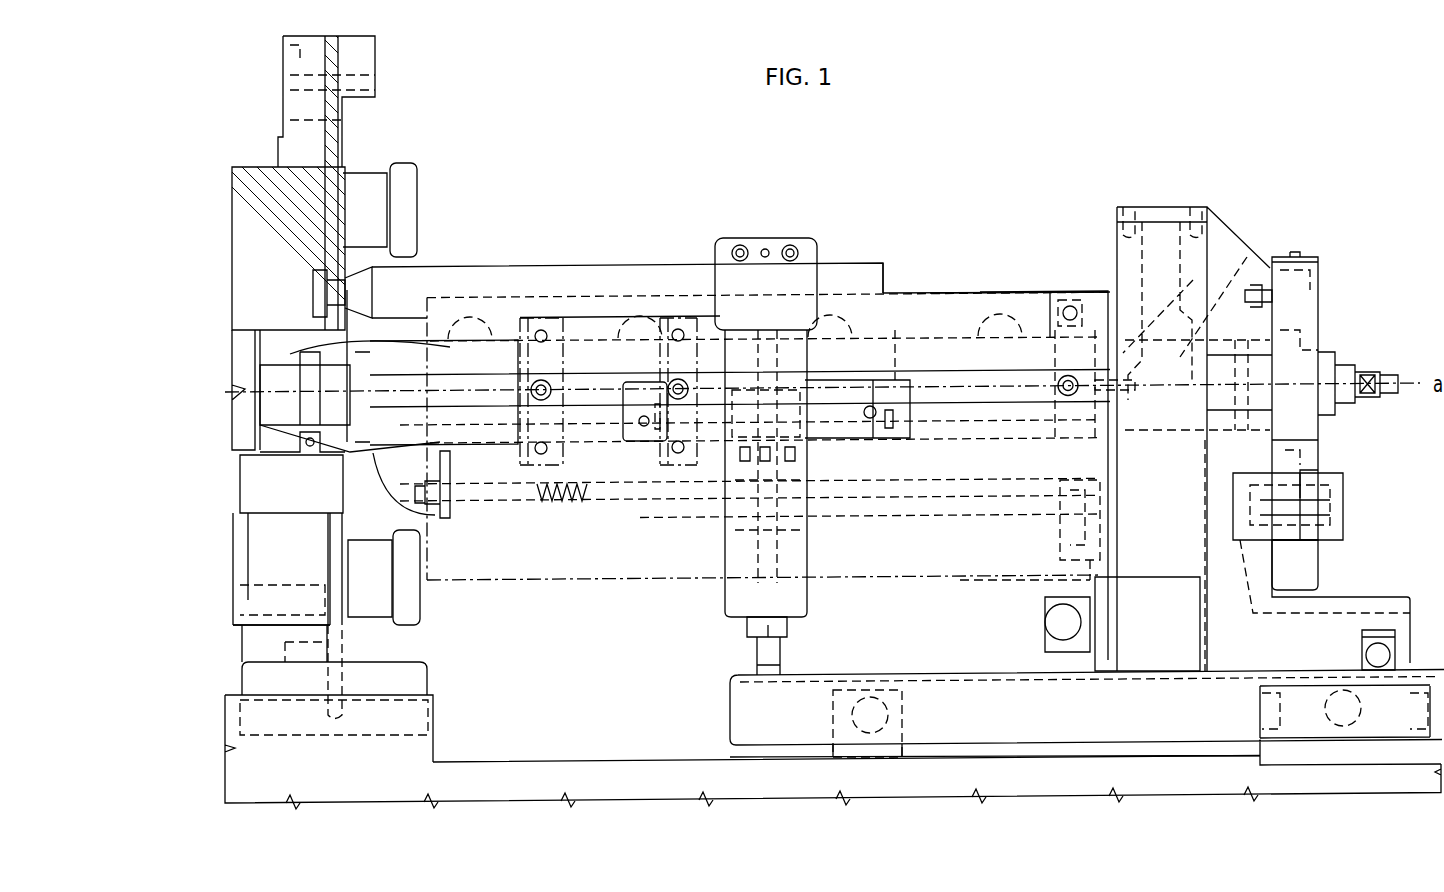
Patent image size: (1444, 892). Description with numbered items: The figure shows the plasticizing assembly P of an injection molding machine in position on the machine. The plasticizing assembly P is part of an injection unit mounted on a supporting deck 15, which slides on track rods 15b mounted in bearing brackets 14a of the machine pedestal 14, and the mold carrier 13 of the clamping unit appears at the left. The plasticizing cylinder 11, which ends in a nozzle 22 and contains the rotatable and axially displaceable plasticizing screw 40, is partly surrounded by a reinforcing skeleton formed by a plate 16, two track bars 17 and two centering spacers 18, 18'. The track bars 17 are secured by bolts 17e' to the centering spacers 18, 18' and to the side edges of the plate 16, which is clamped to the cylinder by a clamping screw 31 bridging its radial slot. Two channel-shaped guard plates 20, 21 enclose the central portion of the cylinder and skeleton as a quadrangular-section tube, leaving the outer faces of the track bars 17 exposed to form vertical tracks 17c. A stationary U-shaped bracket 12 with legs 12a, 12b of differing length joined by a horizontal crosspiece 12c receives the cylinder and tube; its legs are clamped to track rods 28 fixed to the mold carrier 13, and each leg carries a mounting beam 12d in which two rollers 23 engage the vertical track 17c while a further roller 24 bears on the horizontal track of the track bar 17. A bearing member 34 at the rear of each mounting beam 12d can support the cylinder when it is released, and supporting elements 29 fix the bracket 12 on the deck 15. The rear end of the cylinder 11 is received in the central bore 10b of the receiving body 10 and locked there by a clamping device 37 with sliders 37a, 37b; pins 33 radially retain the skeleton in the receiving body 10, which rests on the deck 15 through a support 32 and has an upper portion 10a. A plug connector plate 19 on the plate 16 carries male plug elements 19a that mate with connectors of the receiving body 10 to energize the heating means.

The receiving body 10 is at (1237, 224).
The top portion of support block 10a is at (1153, 247).
The central bore 10b is at (1238, 268).
The plasticizing cylinder 11 is at (896, 330).
The U-shaped bracket 12 is at (795, 240).
The leg of U-shaped bracket 12a is at (740, 552).
The leg of U-shaped bracket 12b is at (817, 530).
The horizontal crosspiece 12c is at (797, 597).
The mounting beam 12d is at (852, 428).
The mold carrier 13 is at (352, 152).
The machine pedestal 14 is at (535, 782).
The bearing bracket 14a is at (858, 700).
The supporting deck 15 is at (773, 698).
The track rod 15b is at (876, 705).
The plate 16 is at (1053, 307).
The track bar 17 is at (963, 408).
The vertical track 17c is at (838, 377).
The bolt 17e' is at (811, 429).
The centering spacer 18 is at (531, 341).
The centering spacer 18' is at (677, 342).
The plug connector plate 19 is at (1090, 540).
The male plug connector element 19a is at (1137, 573).
The upper guard plate 20 is at (953, 294).
The lower guard plate 21 is at (993, 540).
The nozzle 22 is at (277, 442).
The roller 23 is at (650, 387).
The roller 24 is at (644, 427).
The track rod 28 is at (412, 298).
The supporting element 29 is at (768, 622).
The clamping screw 31 is at (1070, 305).
The support 32 is at (1368, 630).
The pin 33 is at (1123, 373).
The bearing member 34 is at (880, 418).
The clamping device 37 is at (1322, 284).
The slider 37a is at (1292, 318).
The slider 37b is at (1297, 458).
The plasticizing screw 40 is at (1382, 377).
The plasticizing assembly P is at (578, 295).